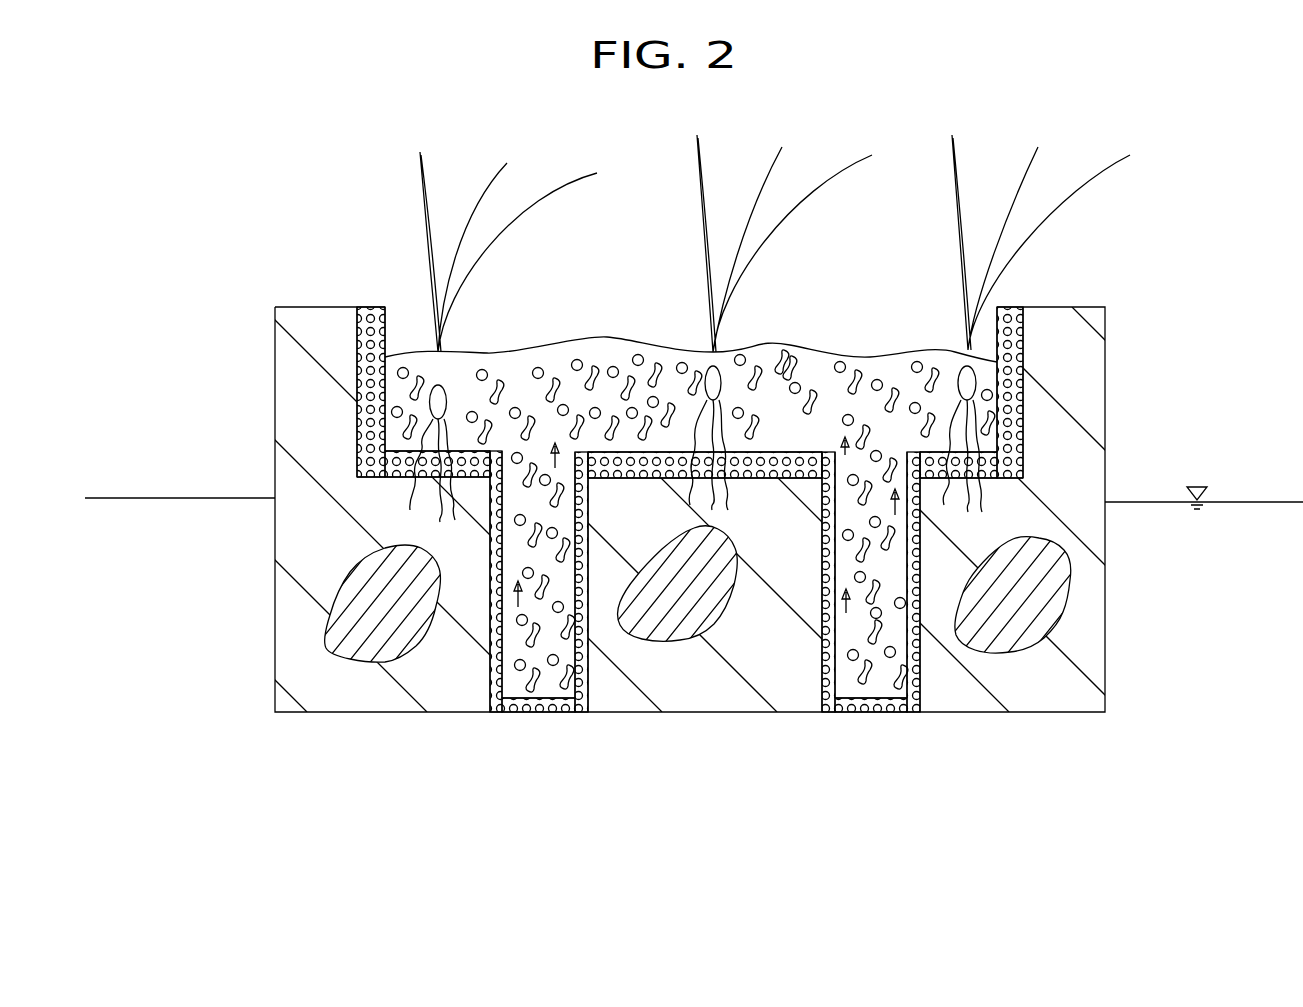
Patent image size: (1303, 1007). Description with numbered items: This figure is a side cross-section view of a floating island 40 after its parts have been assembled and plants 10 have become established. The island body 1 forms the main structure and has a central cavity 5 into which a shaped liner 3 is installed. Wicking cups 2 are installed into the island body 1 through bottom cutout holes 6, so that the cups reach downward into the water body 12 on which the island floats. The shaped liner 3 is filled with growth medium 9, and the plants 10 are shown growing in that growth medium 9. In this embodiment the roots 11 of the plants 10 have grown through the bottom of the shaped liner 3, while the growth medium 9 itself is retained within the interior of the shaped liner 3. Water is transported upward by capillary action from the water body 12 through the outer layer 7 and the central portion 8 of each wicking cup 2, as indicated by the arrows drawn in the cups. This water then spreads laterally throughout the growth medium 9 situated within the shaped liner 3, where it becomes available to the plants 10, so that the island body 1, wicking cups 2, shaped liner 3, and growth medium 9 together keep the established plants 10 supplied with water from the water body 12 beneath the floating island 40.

The island body 1 is at (292, 370).
The wicking cups 2 is at (487, 682).
The shaped liner 3 is at (370, 305).
The central cavity 5 is at (392, 337).
The bottom cutout holes 6 is at (537, 713).
The outer layer 7 is at (594, 688).
The central portion 8 is at (551, 690).
The growth medium 9 is at (823, 360).
The plants 10 is at (708, 227).
The roots 11 is at (420, 507).
The water body 12 is at (1288, 640).
The floating island 40 is at (1153, 293).